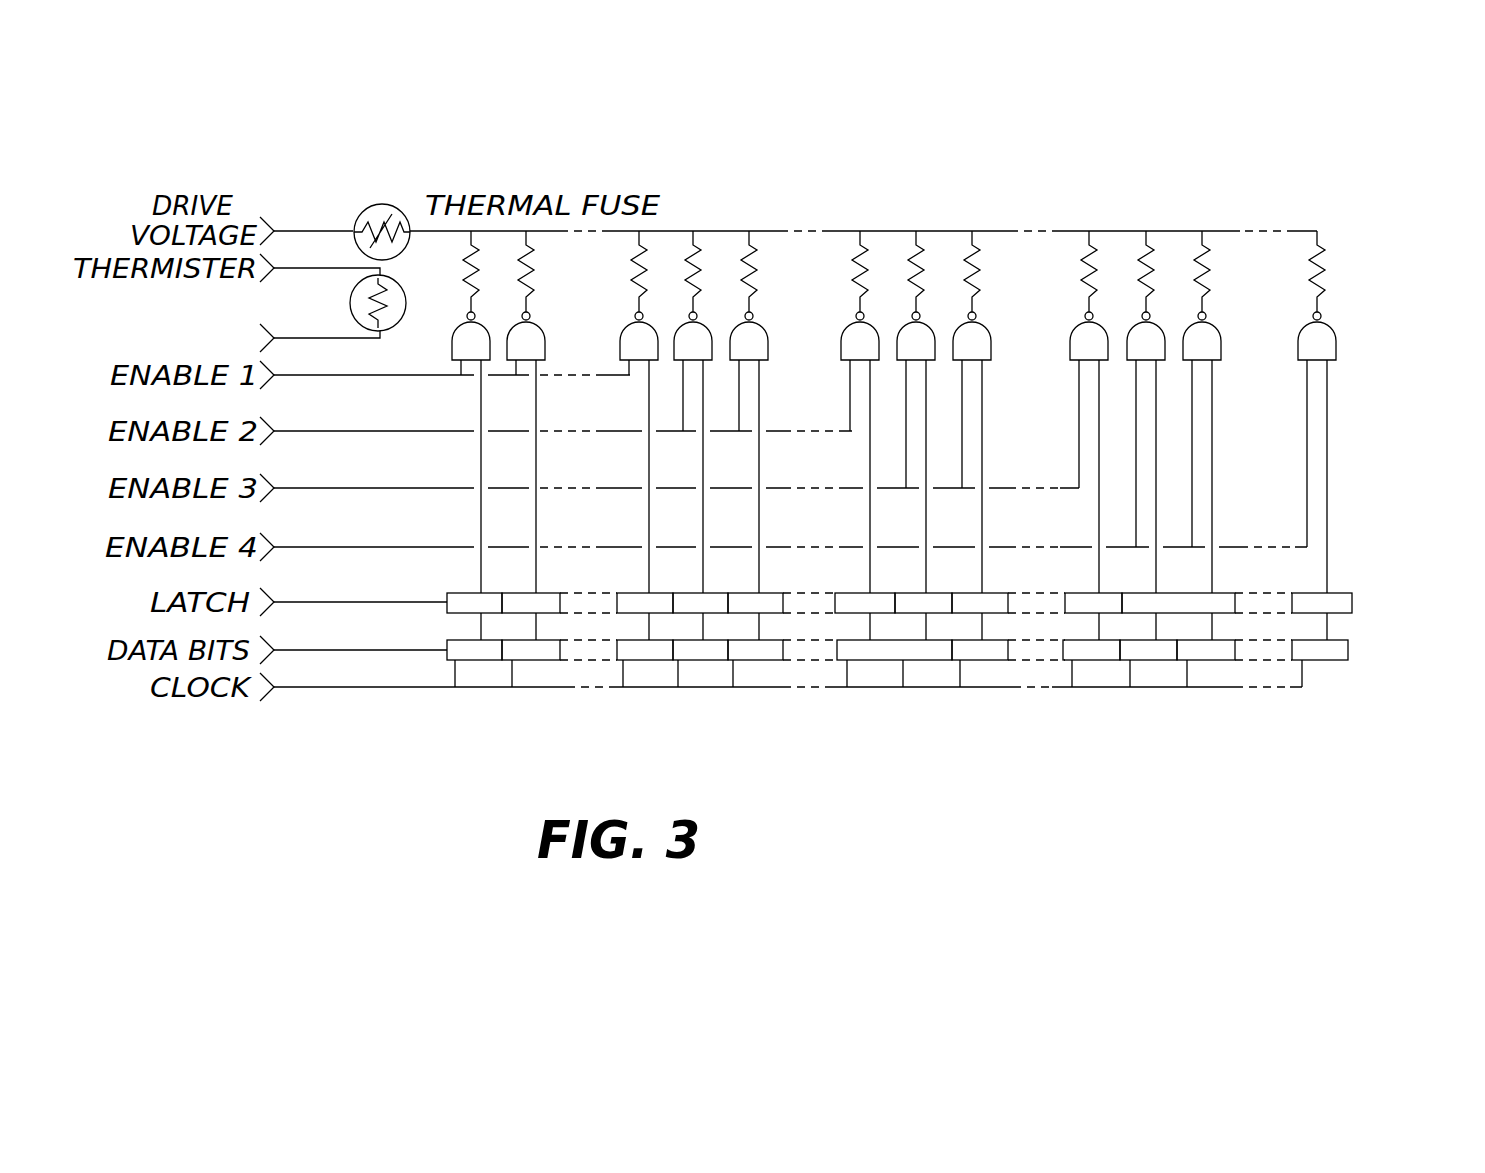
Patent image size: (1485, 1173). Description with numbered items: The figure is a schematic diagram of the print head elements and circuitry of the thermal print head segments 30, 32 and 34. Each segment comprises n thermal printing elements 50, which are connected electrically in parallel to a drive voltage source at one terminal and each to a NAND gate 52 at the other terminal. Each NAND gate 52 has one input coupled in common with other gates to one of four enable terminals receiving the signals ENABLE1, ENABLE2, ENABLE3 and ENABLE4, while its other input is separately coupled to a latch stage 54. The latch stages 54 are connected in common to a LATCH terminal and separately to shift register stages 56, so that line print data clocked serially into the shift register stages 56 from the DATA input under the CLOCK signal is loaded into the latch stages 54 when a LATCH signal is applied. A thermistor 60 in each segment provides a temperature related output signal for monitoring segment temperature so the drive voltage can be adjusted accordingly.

The thermal print head segment 30 is at (898, 641).
The thermal print head segment 32 is at (898, 641).
The thermal print head segment 34 is at (898, 641).
The thermal printing element 50 is at (1317, 274).
The NAND gate 52 is at (1376, 348).
The latch stage 54 is at (1366, 553).
The shift register stage 56 is at (1366, 628).
The thermistor 60 is at (353, 297).